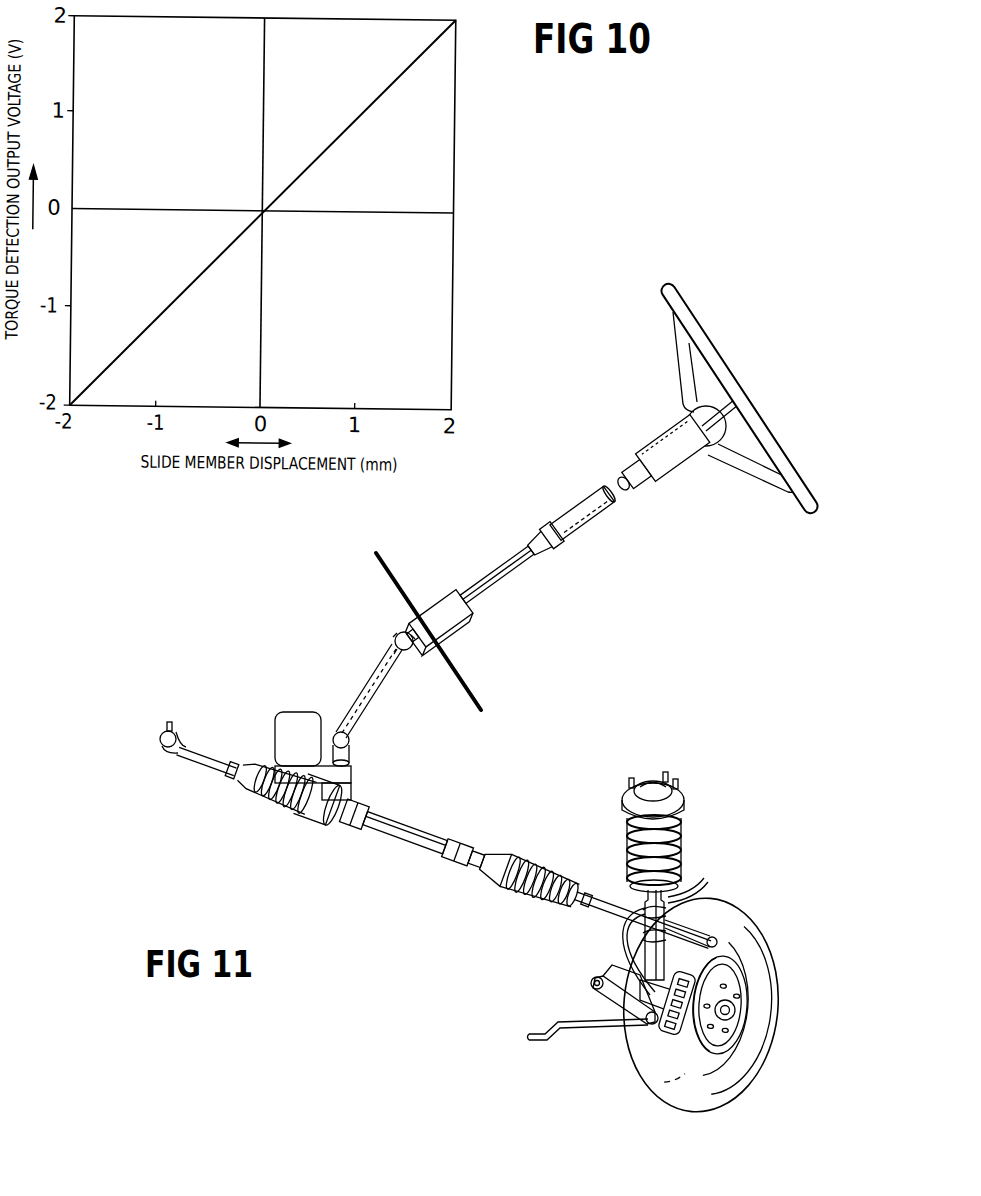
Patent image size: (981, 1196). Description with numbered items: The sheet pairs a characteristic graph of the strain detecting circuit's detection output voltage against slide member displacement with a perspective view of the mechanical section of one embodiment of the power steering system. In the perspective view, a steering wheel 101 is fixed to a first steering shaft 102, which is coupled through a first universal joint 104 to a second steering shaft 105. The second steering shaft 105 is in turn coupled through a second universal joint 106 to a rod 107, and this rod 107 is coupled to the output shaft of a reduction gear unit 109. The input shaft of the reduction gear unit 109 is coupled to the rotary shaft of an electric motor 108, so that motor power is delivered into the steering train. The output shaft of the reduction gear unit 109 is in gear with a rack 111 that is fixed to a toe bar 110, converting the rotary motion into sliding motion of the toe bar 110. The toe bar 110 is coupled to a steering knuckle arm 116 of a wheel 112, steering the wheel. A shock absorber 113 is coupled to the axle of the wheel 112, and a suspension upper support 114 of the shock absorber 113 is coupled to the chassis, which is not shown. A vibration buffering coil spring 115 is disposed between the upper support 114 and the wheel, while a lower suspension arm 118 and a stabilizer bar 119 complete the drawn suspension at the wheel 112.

The steering wheel 101 is at (719, 343).
The first steering shaft 102 is at (627, 489).
The first universal joint 104 is at (402, 635).
The second steering shaft 105 is at (364, 690).
The second universal joint 106 is at (353, 745).
The rod 107 is at (333, 815).
The electric motor 108 is at (288, 712).
The reduction gear unit 109 is at (286, 775).
The toe bar 110 is at (194, 760).
The rack 111 is at (303, 806).
The wheel 112 is at (735, 1077).
The shock absorber 113 is at (699, 884).
The suspension upper support 114 is at (678, 792).
The vibration buffering coil spring 115 is at (683, 832).
The steering knuckle arm 116 is at (712, 935).
The lower suspension arm 118 is at (618, 992).
The stabilizer bar 119 is at (579, 1030).